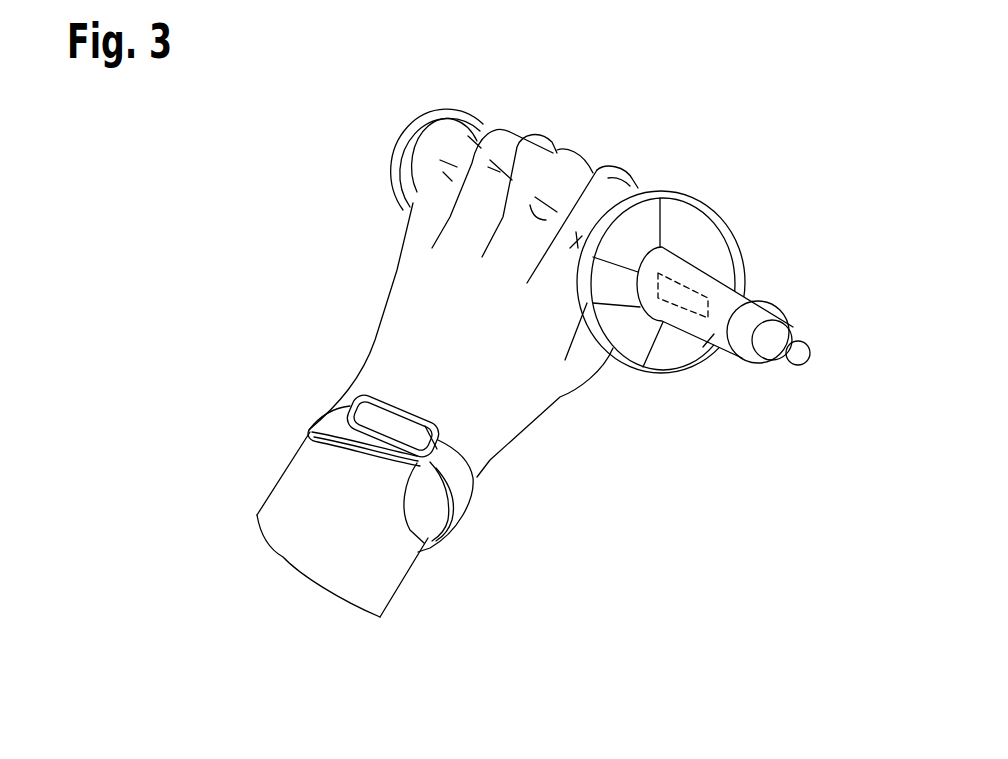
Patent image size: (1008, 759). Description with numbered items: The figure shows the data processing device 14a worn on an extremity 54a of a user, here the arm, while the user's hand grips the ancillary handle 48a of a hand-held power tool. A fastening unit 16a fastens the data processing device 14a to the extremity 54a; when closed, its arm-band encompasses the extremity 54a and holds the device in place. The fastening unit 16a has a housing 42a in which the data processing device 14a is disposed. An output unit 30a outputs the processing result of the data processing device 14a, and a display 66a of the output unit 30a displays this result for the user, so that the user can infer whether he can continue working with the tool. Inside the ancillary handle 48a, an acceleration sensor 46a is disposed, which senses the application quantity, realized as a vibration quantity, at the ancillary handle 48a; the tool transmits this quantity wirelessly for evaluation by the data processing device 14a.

The data processing device 14a is at (296, 396).
The fastening unit 16a is at (464, 486).
The output unit 30a is at (314, 363).
The housing 42a is at (428, 541).
The acceleration sensor 46a is at (672, 297).
The ancillary handle 48a is at (420, 142).
The extremity 54a is at (323, 500).
The display 66a is at (400, 424).